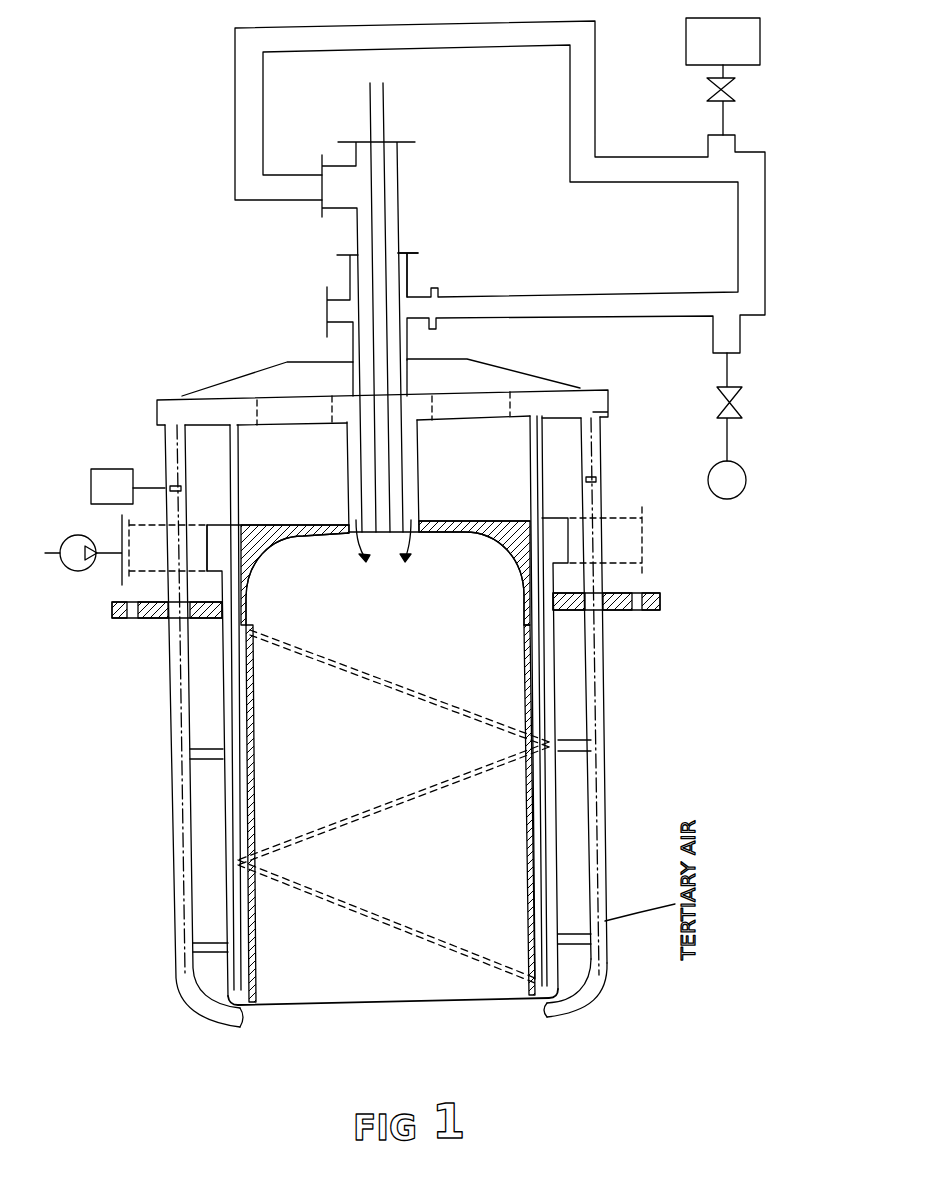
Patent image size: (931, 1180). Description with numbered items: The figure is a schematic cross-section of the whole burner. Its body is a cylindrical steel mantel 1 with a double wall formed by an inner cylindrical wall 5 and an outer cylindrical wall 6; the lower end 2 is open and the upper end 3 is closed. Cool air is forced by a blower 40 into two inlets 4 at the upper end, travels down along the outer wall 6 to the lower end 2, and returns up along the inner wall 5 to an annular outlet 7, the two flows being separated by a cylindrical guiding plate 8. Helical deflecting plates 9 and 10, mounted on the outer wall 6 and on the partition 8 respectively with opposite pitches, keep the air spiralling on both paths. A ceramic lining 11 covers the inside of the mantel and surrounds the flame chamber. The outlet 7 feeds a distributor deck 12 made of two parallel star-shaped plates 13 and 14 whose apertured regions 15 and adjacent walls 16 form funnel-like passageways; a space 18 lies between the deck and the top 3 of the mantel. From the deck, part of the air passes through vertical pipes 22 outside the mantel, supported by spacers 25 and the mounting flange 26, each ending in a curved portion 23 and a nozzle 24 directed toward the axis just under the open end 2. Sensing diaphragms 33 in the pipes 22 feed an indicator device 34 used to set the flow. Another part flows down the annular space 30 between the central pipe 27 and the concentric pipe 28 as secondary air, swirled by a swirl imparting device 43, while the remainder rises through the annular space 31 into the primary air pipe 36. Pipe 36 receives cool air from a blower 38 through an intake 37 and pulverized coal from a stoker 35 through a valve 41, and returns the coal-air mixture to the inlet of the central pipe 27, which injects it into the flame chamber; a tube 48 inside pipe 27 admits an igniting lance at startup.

The steel mantel 1 is at (556, 700).
The lower open end 2 is at (435, 1002).
The closed upper end 3 is at (250, 525).
The inlet 4 is at (157, 570).
The inner cylindrical wall 5 is at (528, 487).
The outer cylindrical wall 6 is at (558, 878).
The annular outlet 7 is at (235, 477).
The guiding plate 8 is at (542, 460).
The deflecting plate 9 is at (383, 810).
The deflecting plate 10 is at (365, 672).
The ceramic lining 11 is at (252, 592).
The distributor deck 12 is at (650, 396).
The upper star-shaped plate 13 is at (568, 387).
The lower star-shaped plate 14 is at (501, 423).
The apertured region 15 is at (287, 410).
The adjacent wall 16 is at (257, 415).
The space 18 is at (312, 440).
The vertical pipe 22 is at (180, 721).
The curved end 23 is at (598, 986).
The nozzle 24 is at (222, 1027).
The spacer 25 is at (390, 846).
The flange 26 is at (155, 618).
The central pipe 27 is at (400, 182).
The concentric pipe 28 is at (408, 347).
The annular space 30 is at (358, 350).
The annular space 31 is at (405, 272).
The sensing diaphragm 33 is at (185, 472).
The indicator device 34 is at (112, 469).
The stoker 35 is at (686, 50).
The pipe 36 is at (540, 297).
The intake 37 is at (713, 335).
The blower 38 is at (733, 497).
The blower 40 is at (72, 535).
The valve 41 is at (707, 88).
The swirl imparting device 43 is at (418, 452).
The tube 48 is at (385, 95).